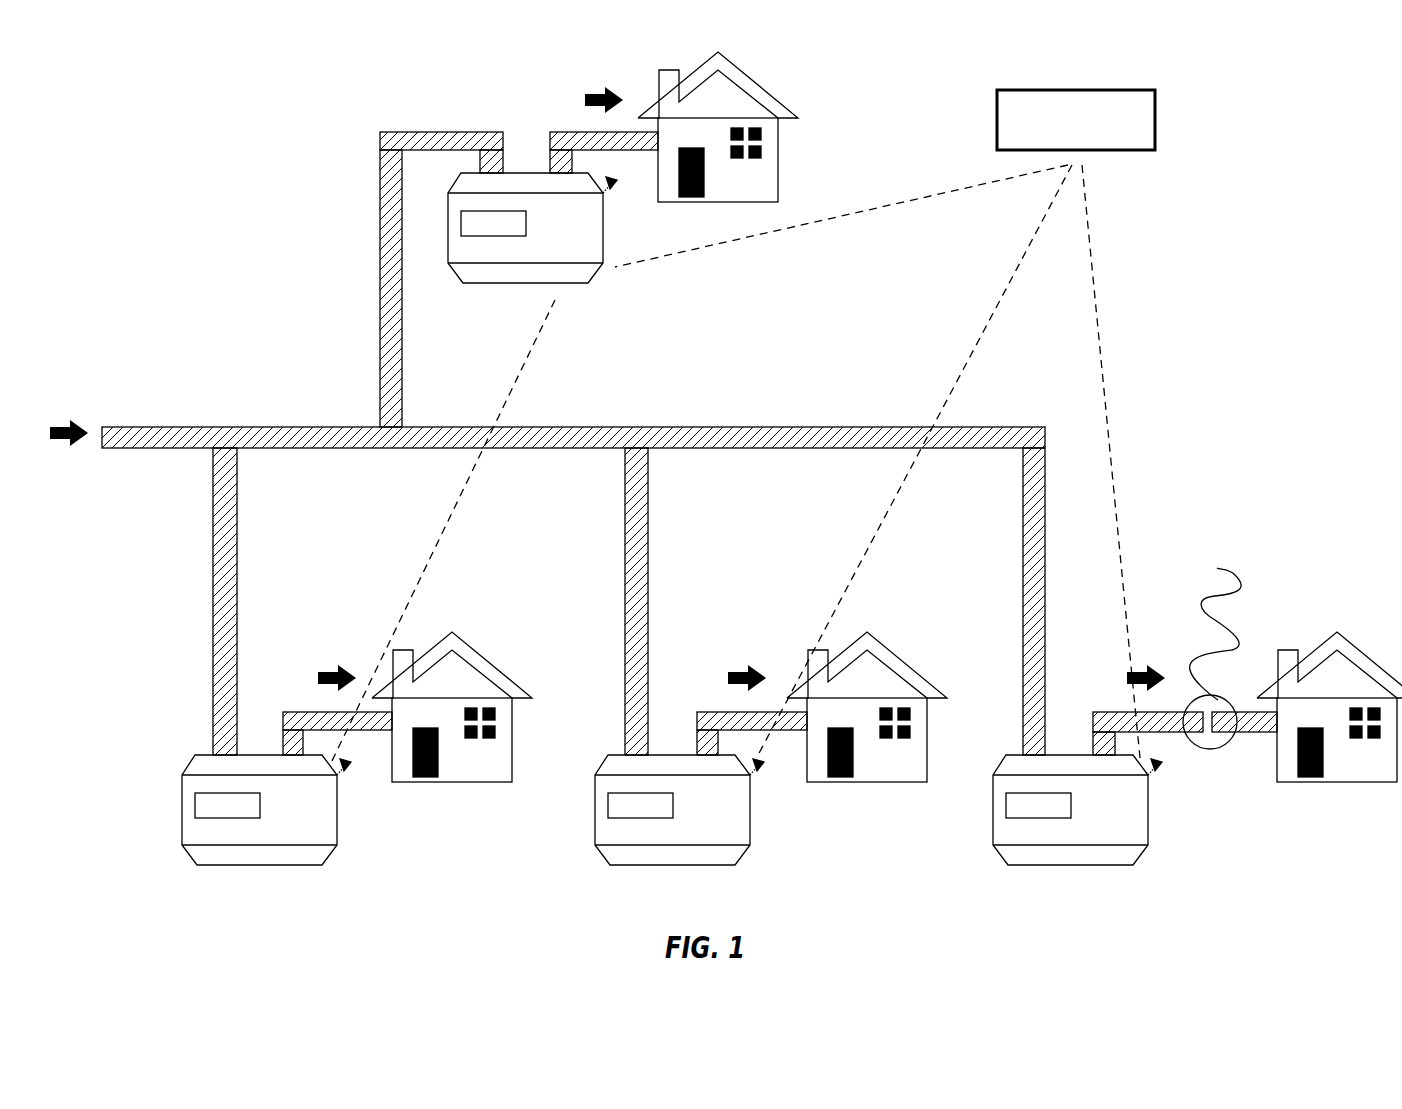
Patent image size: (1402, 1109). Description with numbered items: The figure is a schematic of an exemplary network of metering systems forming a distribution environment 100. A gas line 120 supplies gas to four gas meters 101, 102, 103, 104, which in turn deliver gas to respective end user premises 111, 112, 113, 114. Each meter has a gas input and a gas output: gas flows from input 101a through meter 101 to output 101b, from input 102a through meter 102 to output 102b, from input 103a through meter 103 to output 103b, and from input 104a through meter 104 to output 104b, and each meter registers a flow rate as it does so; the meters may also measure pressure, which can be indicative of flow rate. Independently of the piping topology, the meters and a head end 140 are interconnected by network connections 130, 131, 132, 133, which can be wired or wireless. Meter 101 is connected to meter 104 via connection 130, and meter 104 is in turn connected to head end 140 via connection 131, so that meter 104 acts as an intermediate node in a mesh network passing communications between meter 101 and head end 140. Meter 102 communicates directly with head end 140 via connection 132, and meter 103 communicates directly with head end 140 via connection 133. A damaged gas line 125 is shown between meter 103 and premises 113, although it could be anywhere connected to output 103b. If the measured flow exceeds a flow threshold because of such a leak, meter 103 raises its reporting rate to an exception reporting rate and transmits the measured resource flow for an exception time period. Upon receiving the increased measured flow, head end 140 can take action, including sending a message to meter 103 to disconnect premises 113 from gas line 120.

The distribution environment 100 is at (82, 61).
The meter 101 is at (315, 841).
The input 101a is at (212, 735).
The output 101b is at (297, 705).
The meter 102 is at (679, 810).
The input 102a is at (624, 735).
The output 102b is at (709, 705).
The meter 103 is at (1077, 810).
The input 103a is at (1022, 735).
The output 103b is at (1105, 705).
The meter 104 is at (532, 228).
The input 104a is at (475, 125).
The output 104b is at (561, 122).
The end user premises 111 is at (497, 771).
The end user premises 112 is at (837, 707).
The end user premises 113 is at (1264, 707).
The end user premises 114 is at (691, 127).
The gas line 120 is at (258, 418).
The damaged gas line 125 is at (1207, 750).
The network connection 130 is at (442, 532).
The network connection 131 is at (841, 216).
The network connection 132 is at (914, 461).
The network connection 133 is at (1118, 461).
The head end 140 is at (1125, 133).